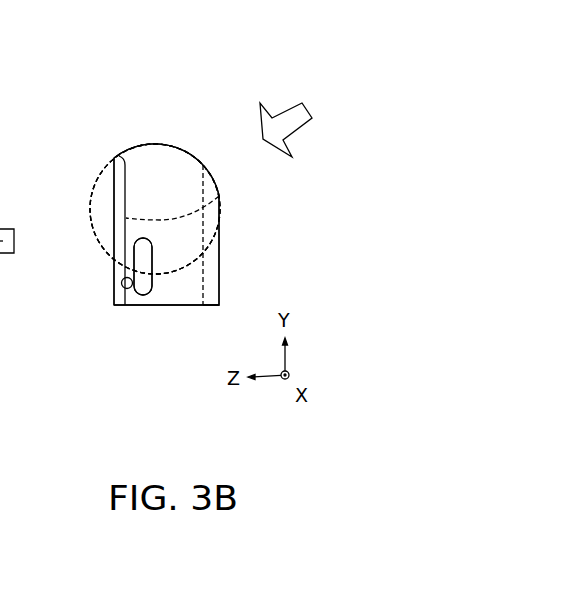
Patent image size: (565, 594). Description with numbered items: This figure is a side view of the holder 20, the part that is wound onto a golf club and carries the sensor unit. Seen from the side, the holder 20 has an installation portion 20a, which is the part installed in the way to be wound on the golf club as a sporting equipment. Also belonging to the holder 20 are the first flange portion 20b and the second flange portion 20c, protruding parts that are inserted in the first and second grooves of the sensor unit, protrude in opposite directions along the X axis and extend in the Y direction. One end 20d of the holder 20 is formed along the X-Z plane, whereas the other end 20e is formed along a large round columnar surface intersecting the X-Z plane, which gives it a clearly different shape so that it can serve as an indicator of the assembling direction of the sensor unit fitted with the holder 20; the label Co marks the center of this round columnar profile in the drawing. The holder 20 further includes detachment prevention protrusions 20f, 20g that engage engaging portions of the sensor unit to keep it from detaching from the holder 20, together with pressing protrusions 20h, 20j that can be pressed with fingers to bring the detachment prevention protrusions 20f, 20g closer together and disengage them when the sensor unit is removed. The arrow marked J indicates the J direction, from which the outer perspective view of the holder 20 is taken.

The holder 20 is at (171, 58).
The installation portion 20a is at (203, 253).
The first flange portion 20b is at (220, 194).
The second flange portion 20c is at (222, 209).
The one end 20d is at (172, 310).
The other end 20e is at (190, 146).
The detachment prevention protrusion 20f is at (89, 279).
The detachment prevention protrusion 20g is at (124, 289).
The pressing protrusion 20h is at (132, 266).
The pressing protrusion 20j is at (98, 294).
The center of sphere Co is at (90, 210).
The J direction J is at (286, 130).